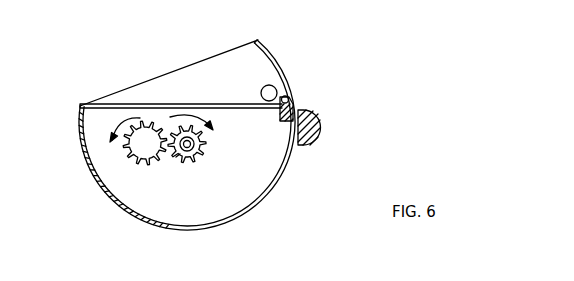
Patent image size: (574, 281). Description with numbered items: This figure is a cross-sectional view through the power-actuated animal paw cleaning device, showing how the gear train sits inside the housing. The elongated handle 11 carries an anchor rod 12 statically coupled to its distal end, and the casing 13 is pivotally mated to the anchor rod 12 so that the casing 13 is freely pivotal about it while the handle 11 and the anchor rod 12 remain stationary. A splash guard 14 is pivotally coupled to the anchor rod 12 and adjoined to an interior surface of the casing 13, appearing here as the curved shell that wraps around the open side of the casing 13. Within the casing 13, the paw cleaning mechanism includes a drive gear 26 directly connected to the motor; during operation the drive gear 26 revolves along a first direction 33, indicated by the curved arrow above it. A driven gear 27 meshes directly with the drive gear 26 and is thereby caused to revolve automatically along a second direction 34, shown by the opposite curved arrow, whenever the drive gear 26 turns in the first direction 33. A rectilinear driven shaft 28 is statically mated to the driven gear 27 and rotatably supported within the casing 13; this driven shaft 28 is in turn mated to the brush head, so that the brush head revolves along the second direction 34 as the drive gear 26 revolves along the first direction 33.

The elongated handle 11 is at (315, 120).
The anchor rod 12 is at (200, 150).
The casing 13 is at (245, 215).
The splash guard 14 is at (263, 47).
The drive gear 26 is at (128, 153).
The driven gear 27 is at (177, 157).
The rectilinear driven shaft 28 is at (195, 143).
The first direction 33 is at (125, 120).
The second direction 34 is at (193, 117).